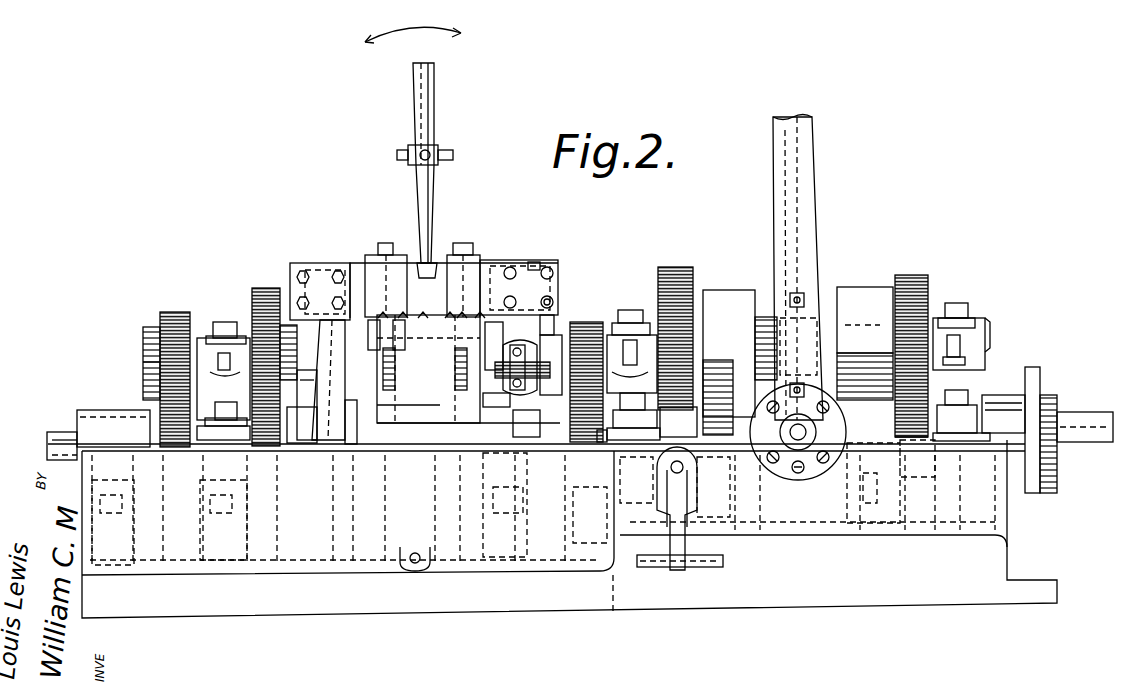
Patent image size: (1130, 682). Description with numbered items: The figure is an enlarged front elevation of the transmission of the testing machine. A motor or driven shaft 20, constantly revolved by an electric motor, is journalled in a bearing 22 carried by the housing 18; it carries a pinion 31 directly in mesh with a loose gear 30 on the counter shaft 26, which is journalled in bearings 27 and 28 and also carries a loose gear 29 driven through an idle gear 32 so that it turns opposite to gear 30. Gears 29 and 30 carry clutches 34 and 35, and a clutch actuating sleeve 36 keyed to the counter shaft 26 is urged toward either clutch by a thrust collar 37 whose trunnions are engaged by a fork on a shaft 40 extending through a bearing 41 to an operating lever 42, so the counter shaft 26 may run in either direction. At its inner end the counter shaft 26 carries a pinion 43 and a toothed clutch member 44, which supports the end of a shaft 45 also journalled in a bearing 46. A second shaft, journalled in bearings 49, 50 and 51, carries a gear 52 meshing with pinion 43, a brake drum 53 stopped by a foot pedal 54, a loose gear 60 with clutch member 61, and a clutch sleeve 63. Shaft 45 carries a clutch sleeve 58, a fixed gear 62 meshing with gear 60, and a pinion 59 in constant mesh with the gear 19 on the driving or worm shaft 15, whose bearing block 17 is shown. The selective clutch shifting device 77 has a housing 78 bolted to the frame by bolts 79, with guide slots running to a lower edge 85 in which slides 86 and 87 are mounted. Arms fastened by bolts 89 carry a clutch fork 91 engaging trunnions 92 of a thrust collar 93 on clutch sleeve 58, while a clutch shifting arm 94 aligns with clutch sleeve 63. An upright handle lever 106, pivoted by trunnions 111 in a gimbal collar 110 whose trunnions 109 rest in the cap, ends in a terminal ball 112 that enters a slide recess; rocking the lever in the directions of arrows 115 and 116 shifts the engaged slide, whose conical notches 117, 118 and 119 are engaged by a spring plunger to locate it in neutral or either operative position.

The driving or worm shaft 15 is at (58, 433).
The bearing block 17 is at (113, 428).
The housing 18 is at (552, 529).
The gear 19 is at (165, 400).
The motor or driven shaft 20 is at (1076, 420).
The bearing 22 is at (994, 400).
The counter shaft 26 is at (712, 290).
The bearing 27 is at (650, 318).
The bearing 28 is at (972, 322).
The loose gear 29 is at (672, 267).
The loose gear 30 is at (914, 275).
The pinion 31 is at (918, 432).
The idle gear 32 is at (676, 395).
The clutch 34 is at (735, 280).
The clutch 35 is at (865, 343).
The clutch actuating collar or sleeve 36 is at (830, 318).
The thrust collar 37 is at (820, 268).
The shaft 40 is at (805, 437).
The bearing 41 is at (816, 467).
The operating lever or handle 42 is at (802, 160).
The pinion 43 is at (586, 322).
The toothed clutch member 44 is at (556, 325).
The shaft 45 is at (148, 345).
The bearing 46 is at (200, 337).
The bearing 49 is at (212, 430).
The bearing 50 is at (527, 440).
The bearing 51 is at (628, 430).
The gear 52 is at (600, 440).
The brake drum 53 is at (722, 472).
The foot pedal 54 is at (667, 568).
The clutch sleeve or collar 58 is at (534, 262).
The pinion 59 is at (170, 312).
The gear 60 is at (263, 444).
The clutch member 61 is at (300, 446).
The gear 62 is at (258, 288).
The clutch sleeve 63 is at (313, 450).
The selective clutch shifting device 77 is at (462, 385).
The housing 78 is at (424, 356).
The bolts 79 is at (347, 412).
The lower edge 85 is at (455, 262).
The slide 86 is at (485, 283).
The slide 87 is at (316, 268).
The bolts 89 is at (546, 292).
The clutch fork 91 is at (553, 328).
The trunnions 92 is at (505, 318).
The thrust collar 93 is at (523, 365).
The clutch shifting arm 94 is at (322, 382).
The selective clutch shifting handle lever 106 is at (424, 126).
The horizontal trunnions 109 is at (438, 147).
The gimbal collar or annulus 110 is at (408, 158).
The horizontal trunnions 111 is at (453, 157).
The terminal ball 112 is at (432, 262).
The arrow 115 is at (393, 42).
The arrow 116 is at (480, 37).
The tapering notch or recess 117 is at (371, 255).
The tapering notch or recess 118 is at (362, 268).
The tapering notch or recess 119 is at (398, 268).